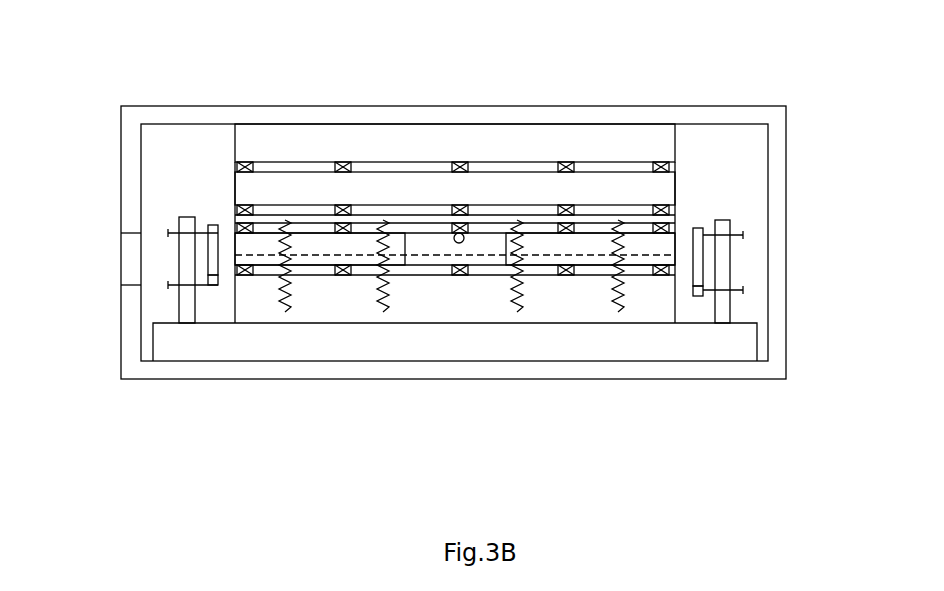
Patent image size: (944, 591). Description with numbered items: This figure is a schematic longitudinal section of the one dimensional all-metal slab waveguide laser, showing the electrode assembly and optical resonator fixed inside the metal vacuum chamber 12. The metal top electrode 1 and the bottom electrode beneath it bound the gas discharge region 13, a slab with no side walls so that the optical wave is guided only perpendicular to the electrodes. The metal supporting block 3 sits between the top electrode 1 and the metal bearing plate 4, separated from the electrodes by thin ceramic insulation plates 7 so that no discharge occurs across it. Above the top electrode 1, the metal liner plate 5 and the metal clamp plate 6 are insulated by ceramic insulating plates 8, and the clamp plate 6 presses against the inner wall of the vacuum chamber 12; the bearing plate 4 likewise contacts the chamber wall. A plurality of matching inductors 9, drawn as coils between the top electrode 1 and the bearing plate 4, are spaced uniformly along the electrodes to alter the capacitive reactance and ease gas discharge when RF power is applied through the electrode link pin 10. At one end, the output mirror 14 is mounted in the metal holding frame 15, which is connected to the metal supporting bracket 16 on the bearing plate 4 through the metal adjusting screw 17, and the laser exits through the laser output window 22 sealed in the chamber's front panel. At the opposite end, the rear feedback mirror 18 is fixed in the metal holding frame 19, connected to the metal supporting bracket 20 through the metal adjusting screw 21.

The metal top electrode 1 is at (397, 224).
The metal supporting block 3 is at (361, 254).
The metal bearing plate 4 is at (636, 347).
The metal liner plate 5 is at (483, 183).
The metal clamp plate 6 is at (597, 149).
The ceramic insulation plates 7 is at (347, 237).
The ceramic insulating plates 8 is at (340, 206).
The matching inductors 9 is at (386, 302).
The electrode link pin 10 is at (455, 226).
The metal vacuum chamber 12 is at (614, 113).
The gas discharge region 13 is at (476, 258).
The output mirror 14 is at (210, 232).
The metal holding frame for output mirror 15 is at (211, 291).
The metal supporting bracket 16 is at (181, 321).
The metal adjusting screw 17 is at (163, 220).
The rear feedback mirror 18 is at (703, 273).
The metal holding frame for rear feedback mirror 19 is at (698, 297).
The metal supporting bracket 20 is at (729, 276).
The metal adjusting screw 21 is at (742, 229).
The laser output window 22 is at (121, 231).